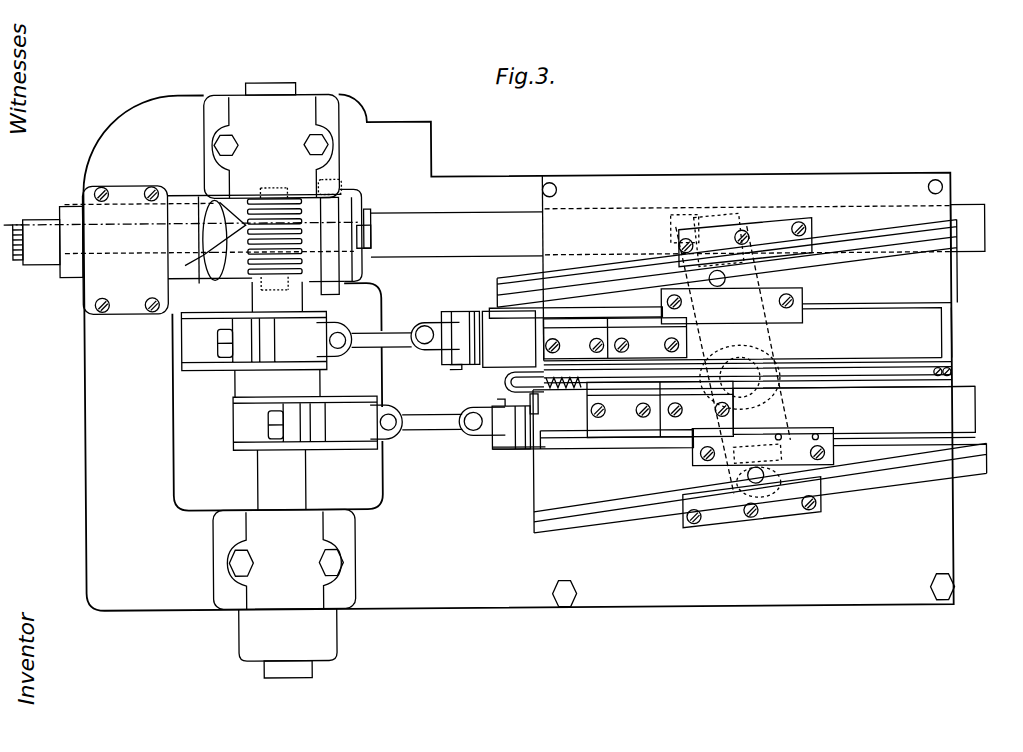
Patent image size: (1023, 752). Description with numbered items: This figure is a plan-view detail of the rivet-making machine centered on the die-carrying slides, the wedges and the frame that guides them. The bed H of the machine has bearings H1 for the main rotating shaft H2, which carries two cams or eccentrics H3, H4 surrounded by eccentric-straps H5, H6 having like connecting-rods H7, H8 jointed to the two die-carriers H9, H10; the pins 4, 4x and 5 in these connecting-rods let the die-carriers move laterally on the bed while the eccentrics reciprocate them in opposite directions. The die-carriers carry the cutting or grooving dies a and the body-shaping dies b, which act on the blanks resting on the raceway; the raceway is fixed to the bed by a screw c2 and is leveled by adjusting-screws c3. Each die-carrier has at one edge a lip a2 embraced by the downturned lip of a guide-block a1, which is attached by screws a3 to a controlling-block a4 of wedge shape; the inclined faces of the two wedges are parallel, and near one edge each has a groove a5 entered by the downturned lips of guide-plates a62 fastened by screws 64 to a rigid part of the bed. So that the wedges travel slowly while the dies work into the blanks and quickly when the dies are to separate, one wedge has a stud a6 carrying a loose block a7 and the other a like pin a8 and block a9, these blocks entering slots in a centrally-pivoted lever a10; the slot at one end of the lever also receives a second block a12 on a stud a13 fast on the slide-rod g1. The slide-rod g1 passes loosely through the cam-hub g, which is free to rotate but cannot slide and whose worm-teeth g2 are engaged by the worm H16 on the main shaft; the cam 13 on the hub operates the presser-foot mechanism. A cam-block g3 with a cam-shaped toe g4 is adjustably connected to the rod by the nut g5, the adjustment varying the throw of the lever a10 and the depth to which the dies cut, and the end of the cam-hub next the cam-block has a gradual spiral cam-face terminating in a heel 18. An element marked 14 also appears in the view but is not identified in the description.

The bed H is at (519, 350).
The bearings H1 is at (341, 166).
The main rotating shaft H2 is at (300, 91).
The cam or eccentric H3 is at (346, 450).
The cam or eccentric H4 is at (254, 333).
The eccentric-strap H5 is at (240, 418).
The eccentric-strap H6 is at (188, 338).
The connecting-rod H7 is at (432, 434).
The connecting-rod H8 is at (382, 352).
The die-carrier H9 is at (503, 448).
The die-carrier H10 is at (486, 367).
The worm H16 is at (300, 223).
The cam-hub g is at (264, 239).
The slide-rod g1 is at (273, 230).
The worm-teeth g2 is at (284, 188).
The cam-block g3 is at (70, 278).
The cam-shaped toe g4 is at (255, 246).
The nut g5 is at (55, 221).
The cam 13 is at (340, 236).
The spring clip 14 is at (518, 360).
The heel 18 is at (243, 225).
The pin 4 is at (425, 326).
The pin 4x is at (452, 370).
The pin 5 is at (340, 334).
The screws 64 is at (679, 248).
The cutting or grooving dies a is at (671, 377).
The guide-block a1 is at (796, 307).
The lip a2 is at (591, 378).
The screws a3 is at (668, 302).
The controlling-block a4 is at (759, 352).
The groove a5 is at (918, 237).
The stud a6 is at (746, 478).
The loose block a7 is at (826, 472).
The pin a8 is at (730, 281).
The block a9 is at (770, 293).
The centrally-pivoted lever a10 is at (765, 348).
The second block a12 is at (710, 223).
The stud a13 is at (722, 223).
The guide-plates a62 is at (797, 223).
The body-shaping dies b is at (638, 377).
The screw c2 is at (951, 374).
The adjusting-screws c3 is at (540, 391).